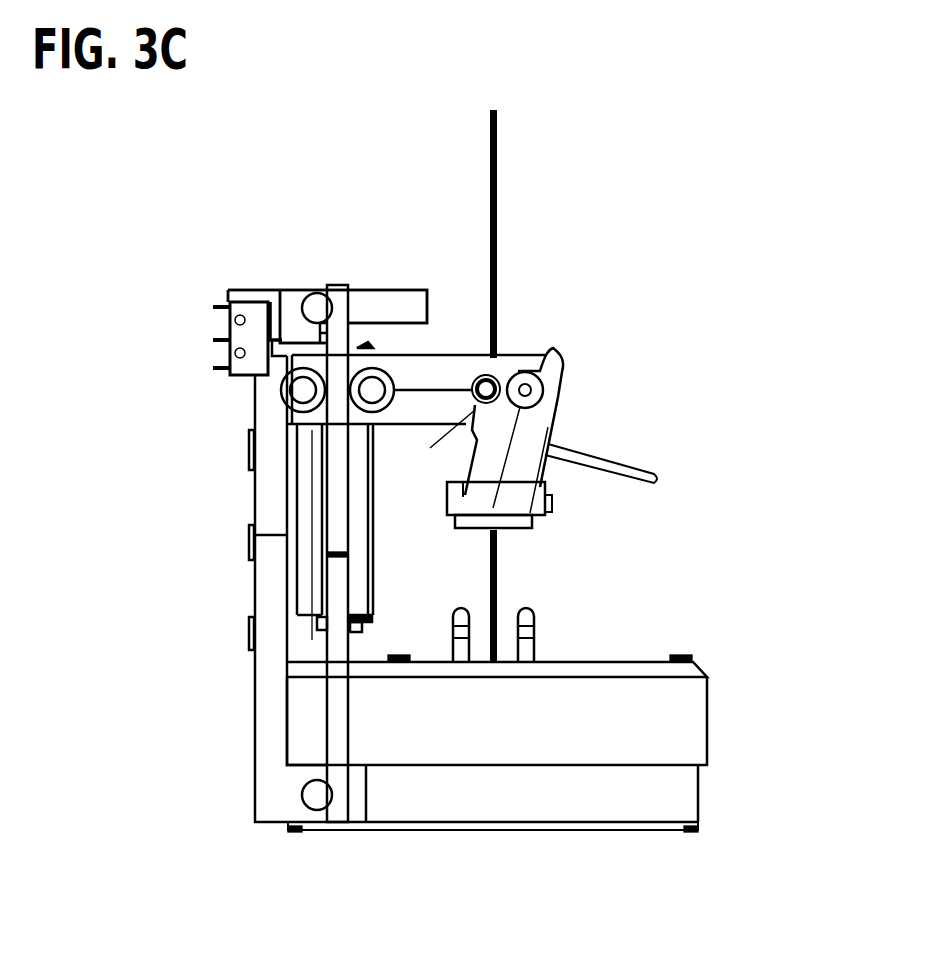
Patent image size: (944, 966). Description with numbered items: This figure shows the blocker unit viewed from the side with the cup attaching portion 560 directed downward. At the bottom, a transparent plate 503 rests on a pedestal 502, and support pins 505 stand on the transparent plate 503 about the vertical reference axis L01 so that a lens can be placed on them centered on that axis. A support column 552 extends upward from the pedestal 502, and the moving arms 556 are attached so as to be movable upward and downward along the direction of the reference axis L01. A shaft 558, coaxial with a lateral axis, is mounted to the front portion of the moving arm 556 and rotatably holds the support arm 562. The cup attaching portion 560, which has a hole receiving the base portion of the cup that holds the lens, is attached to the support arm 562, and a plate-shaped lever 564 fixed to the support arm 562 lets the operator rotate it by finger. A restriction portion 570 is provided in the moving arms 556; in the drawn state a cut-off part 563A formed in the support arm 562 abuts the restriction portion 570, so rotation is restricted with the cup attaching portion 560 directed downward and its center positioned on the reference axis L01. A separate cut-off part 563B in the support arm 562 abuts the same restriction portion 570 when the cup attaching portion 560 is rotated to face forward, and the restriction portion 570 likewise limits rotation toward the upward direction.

The reference axis L01 is at (497, 143).
The moving arm 556 is at (453, 357).
The restriction portion 570 is at (497, 374).
The cut-off part 563B is at (548, 362).
The shaft 558 is at (544, 390).
The support arm 562 is at (550, 423).
The lever 564 is at (603, 458).
The support column 552 is at (336, 467).
The cut-off part 563A is at (430, 448).
The cup attaching portion 560 is at (505, 530).
The support pin 505 is at (452, 620).
The transparent plate 503 is at (652, 662).
The pedestal 502 is at (688, 720).